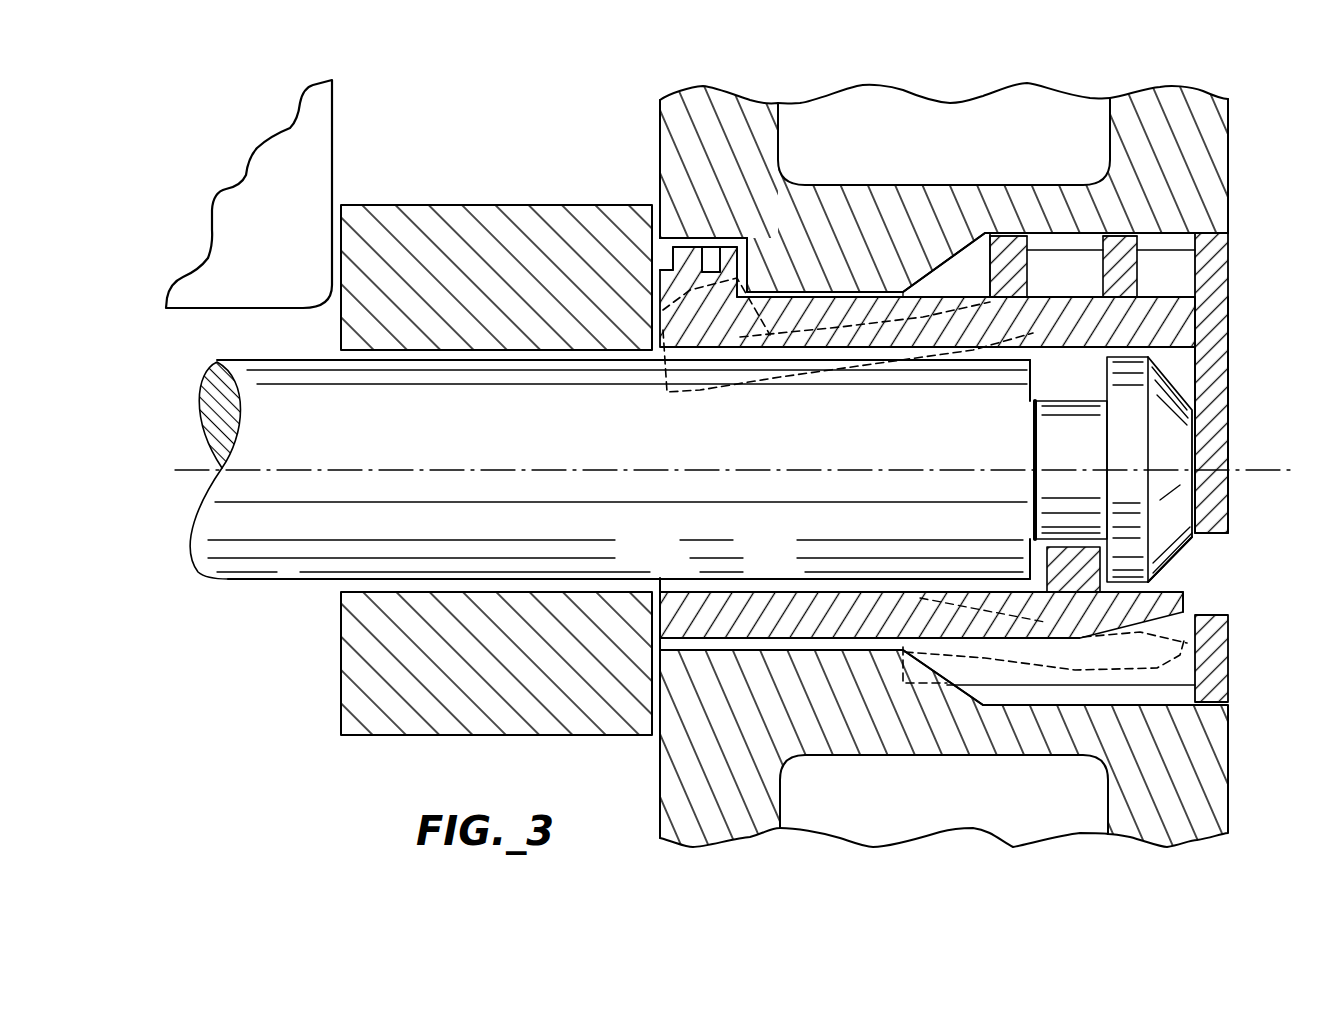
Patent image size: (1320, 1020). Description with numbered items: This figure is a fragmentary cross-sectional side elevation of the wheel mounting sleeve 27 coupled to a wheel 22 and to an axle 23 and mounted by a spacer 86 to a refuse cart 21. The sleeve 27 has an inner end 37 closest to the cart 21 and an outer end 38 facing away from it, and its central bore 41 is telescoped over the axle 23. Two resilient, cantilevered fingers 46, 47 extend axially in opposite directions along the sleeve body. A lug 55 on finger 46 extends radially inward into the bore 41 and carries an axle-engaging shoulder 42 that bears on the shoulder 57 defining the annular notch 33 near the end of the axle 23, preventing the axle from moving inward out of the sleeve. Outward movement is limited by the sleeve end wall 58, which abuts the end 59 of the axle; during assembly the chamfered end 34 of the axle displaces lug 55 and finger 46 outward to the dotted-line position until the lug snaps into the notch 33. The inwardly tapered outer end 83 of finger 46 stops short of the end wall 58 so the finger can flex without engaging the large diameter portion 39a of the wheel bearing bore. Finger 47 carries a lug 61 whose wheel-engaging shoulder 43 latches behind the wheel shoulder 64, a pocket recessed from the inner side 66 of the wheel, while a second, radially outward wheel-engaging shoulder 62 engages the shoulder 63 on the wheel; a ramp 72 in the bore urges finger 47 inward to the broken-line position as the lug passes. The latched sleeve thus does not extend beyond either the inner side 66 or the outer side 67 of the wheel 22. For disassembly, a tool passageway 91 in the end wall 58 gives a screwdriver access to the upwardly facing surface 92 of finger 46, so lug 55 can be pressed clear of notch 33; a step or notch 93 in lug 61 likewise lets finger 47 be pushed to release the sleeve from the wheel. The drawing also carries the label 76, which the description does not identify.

The cart 21 is at (335, 121).
The wheel 22 is at (1232, 157).
The axle 23 is at (290, 568).
The wheel mounting sleeve 27 is at (1233, 288).
The annular notch 33 is at (1043, 402).
The chamfered end 34 is at (1180, 548).
The inner end 37 is at (658, 620).
The outer end 38 is at (1230, 328).
The outer large diameter portion 39a is at (830, 643).
The central bore 41 is at (685, 593).
The axle-engaging shoulder 42 is at (1100, 562).
The wheel-engaging shoulder 43 is at (730, 245).
The resilient finger 46 is at (808, 597).
The resilient finger 47 is at (815, 373).
The lug 55 is at (1090, 560).
The shoulder 57 is at (1103, 457).
The end wall 58 is at (1225, 370).
The axle end 59 is at (1203, 437).
The lug 61 is at (698, 245).
The second wheel-engaging shoulder 62 is at (983, 290).
The wheel shoulder 63 is at (1000, 237).
The wheel shoulder 64 is at (735, 280).
The inner side 66 is at (653, 117).
The outer side 67 is at (1230, 182).
The ramp 72 is at (927, 283).
The chamfer 76 is at (927, 652).
The outer end of finger 83 is at (1167, 617).
The spacer 86 is at (347, 698).
The tool passageway 91 is at (1212, 584).
The upwardly facing surface 92 is at (1162, 592).
The step or notch 93 is at (672, 245).